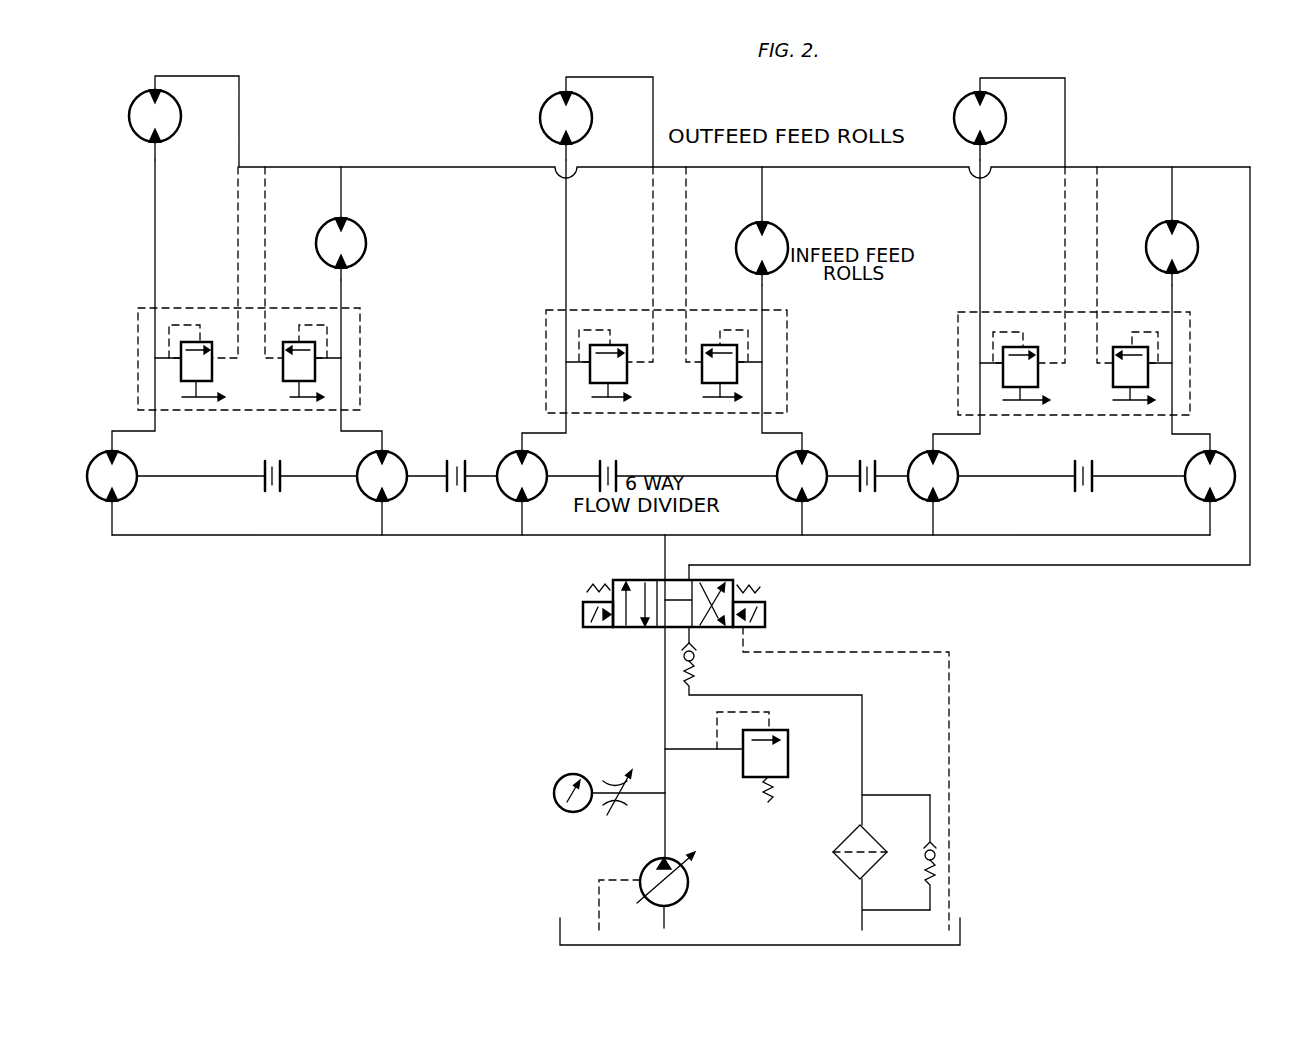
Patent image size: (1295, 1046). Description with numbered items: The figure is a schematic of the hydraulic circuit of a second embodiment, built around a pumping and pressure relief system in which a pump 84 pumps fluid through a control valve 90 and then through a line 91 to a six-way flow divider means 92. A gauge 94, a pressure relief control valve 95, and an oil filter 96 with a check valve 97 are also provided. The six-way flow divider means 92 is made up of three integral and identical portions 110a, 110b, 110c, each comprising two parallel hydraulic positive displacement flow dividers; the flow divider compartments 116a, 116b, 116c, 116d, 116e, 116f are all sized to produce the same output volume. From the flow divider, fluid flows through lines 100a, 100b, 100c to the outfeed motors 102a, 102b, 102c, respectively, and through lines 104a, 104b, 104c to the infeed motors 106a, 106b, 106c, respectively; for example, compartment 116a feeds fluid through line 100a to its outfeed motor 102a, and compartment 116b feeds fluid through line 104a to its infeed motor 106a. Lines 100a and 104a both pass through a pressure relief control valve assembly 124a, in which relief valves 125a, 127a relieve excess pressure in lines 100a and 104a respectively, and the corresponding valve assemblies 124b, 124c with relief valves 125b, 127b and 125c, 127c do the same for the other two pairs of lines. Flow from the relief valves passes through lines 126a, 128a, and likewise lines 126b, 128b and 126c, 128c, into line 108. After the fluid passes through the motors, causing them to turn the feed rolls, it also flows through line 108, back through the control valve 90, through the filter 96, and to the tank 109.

The outfeed motor 102a is at (132, 113).
The outfeed motor 102b is at (546, 117).
The outfeed motor 102c is at (955, 113).
The line 100a is at (152, 233).
The line 100b is at (563, 250).
The line 100c is at (978, 282).
The line 126a is at (237, 212).
The line 126b is at (652, 248).
The line 126c is at (1065, 190).
The line 128a is at (268, 245).
The line 128b is at (687, 260).
The line 128c is at (1125, 212).
The infeed motor 106a is at (363, 242).
The infeed motor 106b is at (782, 228).
The infeed motor 106c is at (1190, 240).
The line 104a is at (342, 287).
The line 104b is at (763, 287).
The line 104c is at (1173, 285).
The pressure relief control valve assembly 124a is at (370, 403).
The pressure relief control valve assembly 124b is at (792, 390).
The pressure relief control valve assembly 124c is at (1195, 370).
The relief valve 125a is at (212, 370).
The relief valve 125b is at (627, 370).
The relief valve 125c is at (1038, 375).
The relief valve 127a is at (290, 368).
The relief valve 127b is at (702, 375).
The relief valve 127c is at (1117, 375).
The flow divider compartment 116a is at (134, 468).
The flow divider compartment 116b is at (404, 466).
The flow divider compartment 116c is at (541, 465).
The flow divider compartment 116d is at (819, 467).
The flow divider compartment 116e is at (962, 472).
The flow divider compartment 116f is at (1185, 480).
The flow divider system portion 110a is at (248, 513).
The flow divider system portion 110b is at (735, 482).
The flow divider system portion 110c is at (1095, 520).
The line 108 is at (1250, 427).
The six-way flow divider means 92 is at (568, 535).
The line 91 is at (664, 553).
The control valve 90 is at (635, 627).
The pressure relief control valve 95 is at (748, 758).
The gauge 94 is at (565, 812).
The pump 84 is at (684, 888).
The oil filter 96 is at (847, 862).
The check valve 97 is at (936, 845).
The tank 109 is at (777, 945).